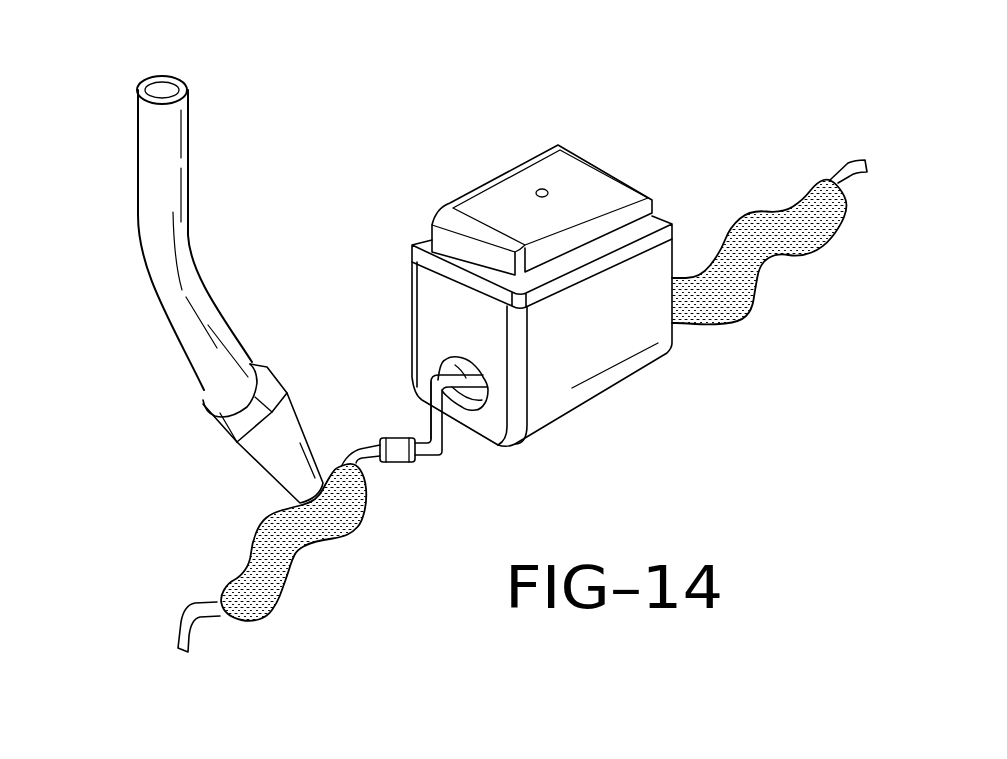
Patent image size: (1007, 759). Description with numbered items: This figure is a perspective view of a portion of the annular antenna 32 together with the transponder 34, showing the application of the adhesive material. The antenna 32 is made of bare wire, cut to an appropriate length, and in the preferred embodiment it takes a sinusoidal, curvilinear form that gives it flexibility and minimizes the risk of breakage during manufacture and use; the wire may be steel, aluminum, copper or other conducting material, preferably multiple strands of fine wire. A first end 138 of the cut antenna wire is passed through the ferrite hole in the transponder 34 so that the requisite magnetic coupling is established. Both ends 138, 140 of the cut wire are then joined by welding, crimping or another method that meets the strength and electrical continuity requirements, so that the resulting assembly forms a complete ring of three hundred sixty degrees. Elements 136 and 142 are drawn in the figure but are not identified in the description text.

The antenna 32 is at (435, 456).
The transponder 34 is at (498, 166).
The connector fitting 136 is at (358, 448).
The first end of the cut antenna wire 138 is at (432, 418).
The end of the cut antenna wire 140 is at (287, 563).
The rigid tube / tube end 142 is at (147, 233).